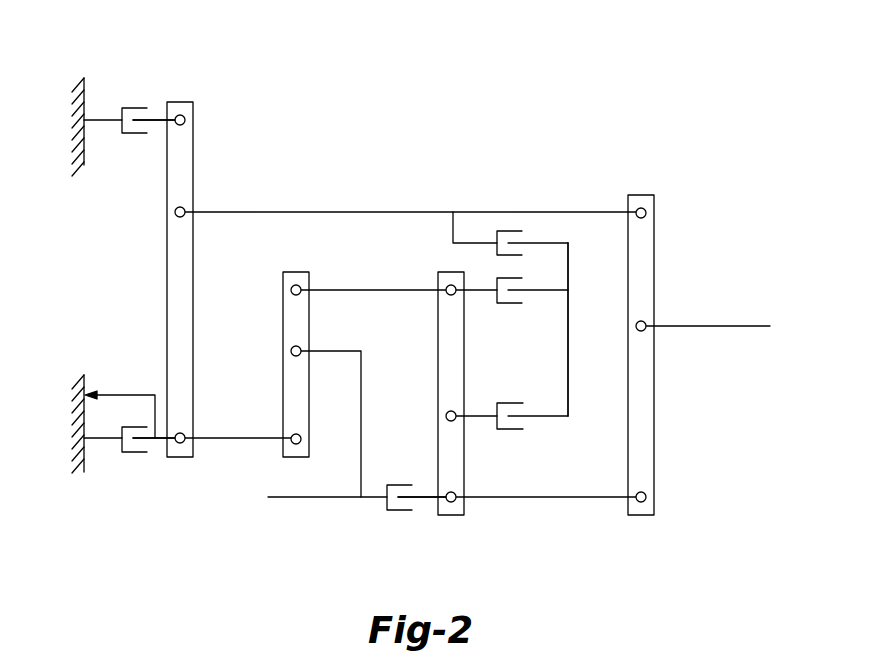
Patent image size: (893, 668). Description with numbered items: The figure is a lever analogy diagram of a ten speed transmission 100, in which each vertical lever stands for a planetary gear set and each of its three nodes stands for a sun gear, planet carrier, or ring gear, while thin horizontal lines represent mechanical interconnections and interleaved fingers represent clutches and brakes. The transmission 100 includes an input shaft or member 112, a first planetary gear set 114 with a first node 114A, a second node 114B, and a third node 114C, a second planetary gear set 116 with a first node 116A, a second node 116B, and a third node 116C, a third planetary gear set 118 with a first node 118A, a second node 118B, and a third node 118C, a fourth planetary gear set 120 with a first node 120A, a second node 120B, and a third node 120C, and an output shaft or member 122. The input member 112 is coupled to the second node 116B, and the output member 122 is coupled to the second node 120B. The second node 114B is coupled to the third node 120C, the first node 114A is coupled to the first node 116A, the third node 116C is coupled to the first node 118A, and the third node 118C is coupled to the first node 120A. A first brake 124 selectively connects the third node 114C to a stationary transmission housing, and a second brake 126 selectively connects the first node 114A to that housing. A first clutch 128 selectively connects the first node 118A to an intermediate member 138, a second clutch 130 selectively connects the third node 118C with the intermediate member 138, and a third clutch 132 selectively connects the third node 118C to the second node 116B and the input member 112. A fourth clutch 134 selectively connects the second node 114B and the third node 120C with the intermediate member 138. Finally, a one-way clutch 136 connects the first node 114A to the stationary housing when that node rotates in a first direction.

The ten speed transmission 100 is at (593, 138).
The input shaft or member 112 is at (298, 500).
The first planetary gear set 114 is at (180, 460).
The first node of the first planetary gear set 114A is at (182, 432).
The second node of the first planetary gear set 114B is at (174, 212).
The third node of the first planetary gear set 114C is at (186, 120).
The second planetary gear set 116 is at (300, 265).
The first node of the second planetary gear set 116A is at (303, 441).
The second node of the second planetary gear set 116B is at (283, 351).
The third node of the second planetary gear set 116C is at (283, 290).
The third planetary gear set 118 is at (457, 518).
The first node of the third planetary gear set 118A is at (450, 283).
The second node of the third planetary gear set 118B is at (444, 416).
The third node of the third planetary gear set 118C is at (449, 490).
The fourth planetary gear set 120 is at (647, 520).
The first node of the fourth planetary gear set 120A is at (647, 497).
The second node of the fourth planetary gear set 120B is at (641, 332).
The third node of the fourth planetary gear set 120C is at (647, 213).
The output shaft or member 122 is at (758, 325).
The first brake 124 is at (135, 108).
The second brake 126 is at (133, 453).
The first clutch 128 is at (510, 305).
The second clutch 130 is at (510, 430).
The third clutch 132 is at (397, 512).
The fourth clutch 134 is at (510, 230).
The one-way clutch 136 is at (120, 395).
The intermediate member 138 is at (568, 398).